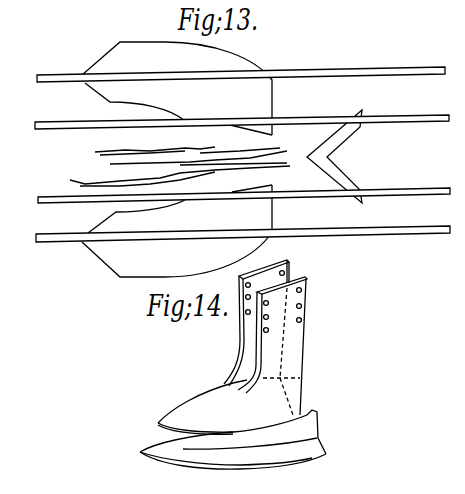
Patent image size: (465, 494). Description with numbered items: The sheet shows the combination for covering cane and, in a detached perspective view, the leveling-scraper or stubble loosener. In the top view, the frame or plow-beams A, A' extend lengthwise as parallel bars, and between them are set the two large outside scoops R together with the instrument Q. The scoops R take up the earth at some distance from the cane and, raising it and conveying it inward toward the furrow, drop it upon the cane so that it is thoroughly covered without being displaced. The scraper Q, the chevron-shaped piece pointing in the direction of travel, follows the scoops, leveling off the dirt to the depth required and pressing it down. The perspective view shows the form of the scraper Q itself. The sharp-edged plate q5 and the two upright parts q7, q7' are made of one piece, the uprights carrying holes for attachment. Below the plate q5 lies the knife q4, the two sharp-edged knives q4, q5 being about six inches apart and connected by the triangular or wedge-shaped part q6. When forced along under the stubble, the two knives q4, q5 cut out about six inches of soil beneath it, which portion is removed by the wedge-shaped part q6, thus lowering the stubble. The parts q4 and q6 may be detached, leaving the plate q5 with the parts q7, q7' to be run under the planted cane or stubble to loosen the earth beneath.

In FIG. 13, the plow-beam A is at (242, 146).
In FIG. 13, the plow-beam A' is at (243, 143).
In FIG. 13, the outside scoop R is at (177, 159).
In FIG. 13, the leveling-scraper Q is at (334, 156).
In FIG. 14, the leveling-scraper Q is at (276, 431).
In FIG. 14, the knife q4 is at (233, 450).
In FIG. 14, the sharp-edged plate q5 is at (202, 407).
In FIG. 14, the wedge-shaped part q6 is at (250, 443).
In FIG. 14, the standard of scraper q7 is at (256, 323).
In FIG. 14, the standard of scraper q7' is at (272, 346).